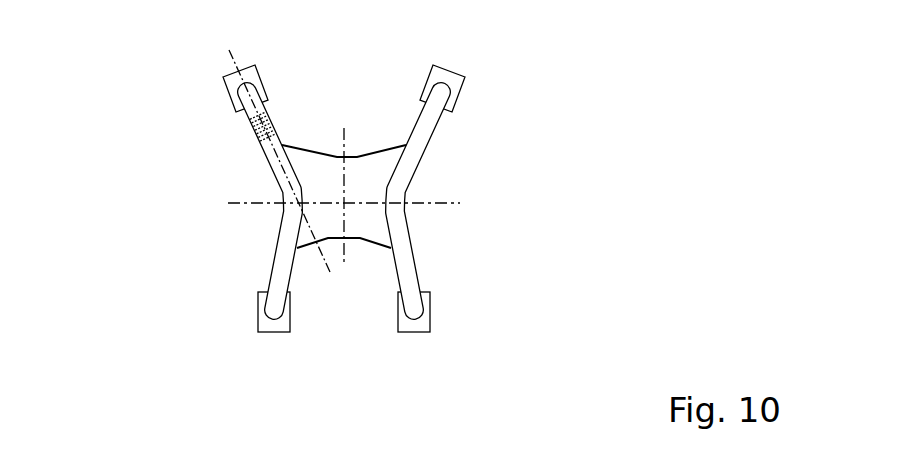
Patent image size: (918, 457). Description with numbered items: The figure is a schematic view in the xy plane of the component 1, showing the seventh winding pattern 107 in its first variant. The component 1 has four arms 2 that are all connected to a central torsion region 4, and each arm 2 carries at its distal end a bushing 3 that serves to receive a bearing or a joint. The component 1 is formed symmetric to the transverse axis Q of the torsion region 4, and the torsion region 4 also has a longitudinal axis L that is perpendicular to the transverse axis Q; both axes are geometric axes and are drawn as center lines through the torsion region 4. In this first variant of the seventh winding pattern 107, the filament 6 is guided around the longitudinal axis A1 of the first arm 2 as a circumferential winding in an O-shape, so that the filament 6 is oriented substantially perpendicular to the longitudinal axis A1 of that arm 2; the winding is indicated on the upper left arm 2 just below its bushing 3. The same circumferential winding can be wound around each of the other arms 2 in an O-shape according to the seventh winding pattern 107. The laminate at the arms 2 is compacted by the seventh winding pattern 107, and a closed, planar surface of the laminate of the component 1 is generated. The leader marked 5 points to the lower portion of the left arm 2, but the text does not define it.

The component 1 is at (480, 113).
The arm 2 is at (283, 147).
The bushing 3 is at (246, 68).
The torsion region 4 is at (363, 225).
The lower arm portion 5 is at (287, 253).
The filament 6 is at (262, 142).
The seventh winding pattern 107 is at (245, 134).
The longitudinal axis of the first arm A1 is at (232, 66).
The longitudinal axis L is at (442, 202).
The transverse axis Q is at (347, 252).